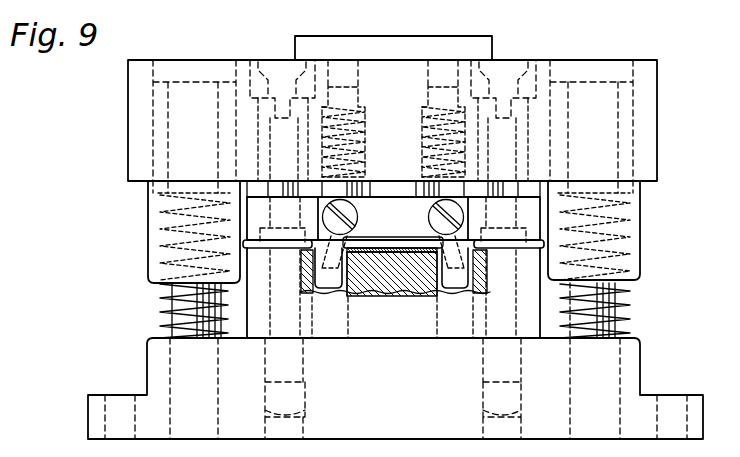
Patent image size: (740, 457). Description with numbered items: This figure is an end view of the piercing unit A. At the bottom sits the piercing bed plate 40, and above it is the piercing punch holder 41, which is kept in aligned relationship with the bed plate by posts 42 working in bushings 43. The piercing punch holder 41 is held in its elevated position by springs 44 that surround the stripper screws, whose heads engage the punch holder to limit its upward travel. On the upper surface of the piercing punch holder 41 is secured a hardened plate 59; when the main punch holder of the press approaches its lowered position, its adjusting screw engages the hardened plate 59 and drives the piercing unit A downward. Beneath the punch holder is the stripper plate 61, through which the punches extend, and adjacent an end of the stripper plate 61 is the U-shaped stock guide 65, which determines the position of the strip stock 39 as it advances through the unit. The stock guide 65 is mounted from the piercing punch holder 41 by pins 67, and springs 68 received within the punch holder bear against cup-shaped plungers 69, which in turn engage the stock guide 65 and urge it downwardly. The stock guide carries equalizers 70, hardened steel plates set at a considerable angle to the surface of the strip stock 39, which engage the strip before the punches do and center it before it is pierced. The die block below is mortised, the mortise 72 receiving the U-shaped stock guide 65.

The piercing unit A is at (671, 60).
The hardened plate 59 is at (480, 43).
The piercing punch holder 41 is at (653, 143).
The springs 68 is at (426, 138).
The pins 67 is at (281, 190).
The cup-shaped plungers 69 is at (422, 193).
The stripper plate 61 is at (252, 208).
The equalizers 70 is at (354, 238).
The stock guide 65 is at (398, 233).
The strip stock 39 is at (385, 258).
The mortise 72 is at (323, 294).
The bushings 43 is at (162, 222).
The springs 44 is at (163, 260).
The posts 42 is at (178, 307).
The piercing bed plate 40 is at (633, 362).